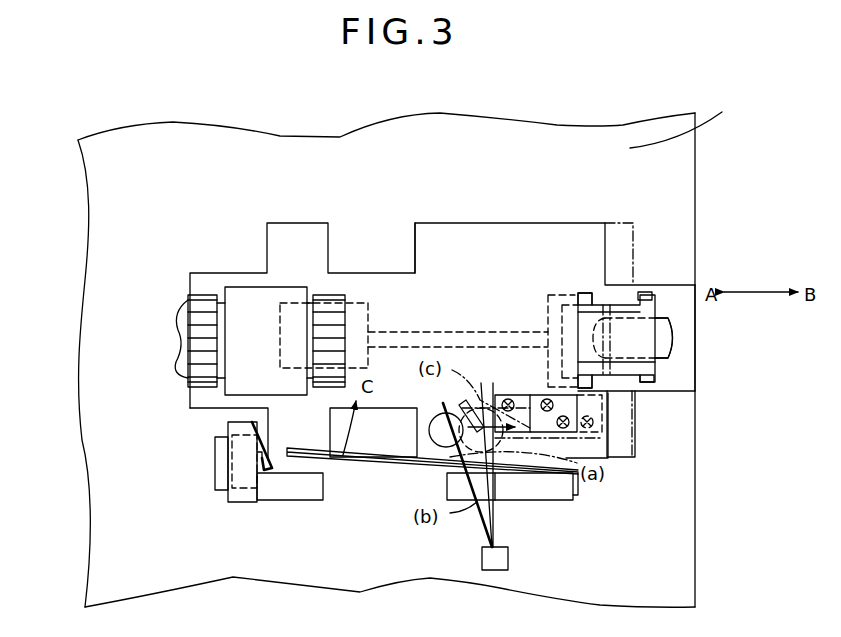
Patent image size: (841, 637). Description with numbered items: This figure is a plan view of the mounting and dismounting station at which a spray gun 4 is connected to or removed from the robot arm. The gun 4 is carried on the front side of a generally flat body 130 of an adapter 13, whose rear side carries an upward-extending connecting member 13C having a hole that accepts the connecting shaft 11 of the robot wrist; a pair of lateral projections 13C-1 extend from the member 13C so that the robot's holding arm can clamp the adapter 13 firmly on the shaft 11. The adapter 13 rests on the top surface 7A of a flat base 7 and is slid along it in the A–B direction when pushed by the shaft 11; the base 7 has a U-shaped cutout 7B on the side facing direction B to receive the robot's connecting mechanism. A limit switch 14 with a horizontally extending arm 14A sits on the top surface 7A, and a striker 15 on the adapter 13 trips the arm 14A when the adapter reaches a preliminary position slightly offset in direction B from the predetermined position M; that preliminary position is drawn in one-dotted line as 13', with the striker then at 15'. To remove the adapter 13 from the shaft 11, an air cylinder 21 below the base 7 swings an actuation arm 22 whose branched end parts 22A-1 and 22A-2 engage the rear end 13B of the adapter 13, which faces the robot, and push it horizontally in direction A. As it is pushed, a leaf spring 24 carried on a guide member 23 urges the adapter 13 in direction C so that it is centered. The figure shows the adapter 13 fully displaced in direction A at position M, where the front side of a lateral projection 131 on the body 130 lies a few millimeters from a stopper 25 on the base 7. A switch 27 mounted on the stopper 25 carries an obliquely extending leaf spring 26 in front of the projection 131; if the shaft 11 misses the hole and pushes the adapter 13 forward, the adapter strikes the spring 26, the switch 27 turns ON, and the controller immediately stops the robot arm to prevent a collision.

The base 7 is at (490, 140).
The top surface 7A is at (688, 123).
The U-shaped cutout 7B is at (684, 371).
The adapter 13 is at (442, 321).
The preliminary predetermined position of the adapter 13' is at (681, 215).
The flat body 130 is at (451, 232).
The lateral projection 131 is at (312, 433).
The rear end 13B is at (548, 378).
The connecting member 13C is at (256, 411).
The lateral projections 13C-1 is at (647, 293).
The spray gun 4 is at (255, 295).
The predetermined position M is at (393, 232).
The air cylinder 21 is at (369, 317).
The actuation arm 22 is at (595, 293).
The end part 22A-1 is at (582, 290).
The end part 22A-2 is at (607, 437).
The connecting shaft 11 is at (660, 358).
The striker 15 is at (569, 444).
The position of the striker 15' is at (619, 451).
The limit switch 14 is at (508, 558).
The arm 14A is at (428, 473).
The guide member 23 is at (547, 490).
The leaf spring 24 is at (378, 465).
The stopper 25 is at (250, 500).
The leaf spring 26 is at (273, 465).
The switch 27 is at (222, 473).